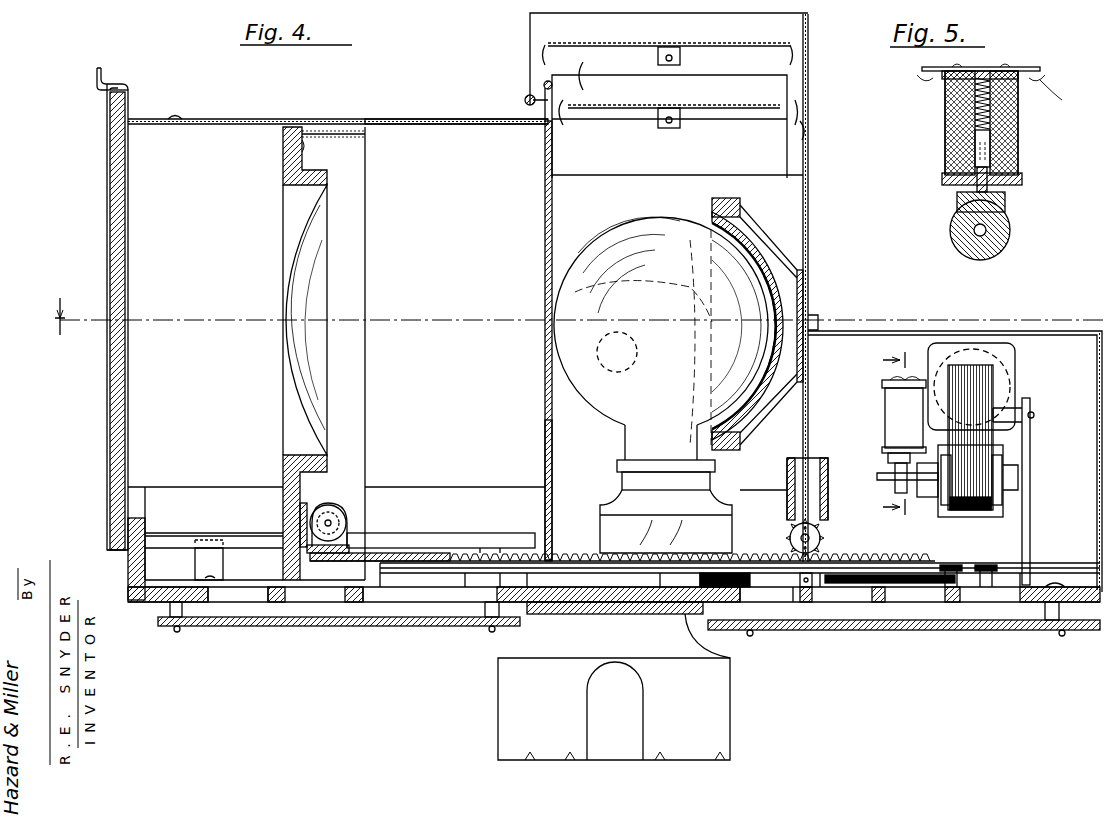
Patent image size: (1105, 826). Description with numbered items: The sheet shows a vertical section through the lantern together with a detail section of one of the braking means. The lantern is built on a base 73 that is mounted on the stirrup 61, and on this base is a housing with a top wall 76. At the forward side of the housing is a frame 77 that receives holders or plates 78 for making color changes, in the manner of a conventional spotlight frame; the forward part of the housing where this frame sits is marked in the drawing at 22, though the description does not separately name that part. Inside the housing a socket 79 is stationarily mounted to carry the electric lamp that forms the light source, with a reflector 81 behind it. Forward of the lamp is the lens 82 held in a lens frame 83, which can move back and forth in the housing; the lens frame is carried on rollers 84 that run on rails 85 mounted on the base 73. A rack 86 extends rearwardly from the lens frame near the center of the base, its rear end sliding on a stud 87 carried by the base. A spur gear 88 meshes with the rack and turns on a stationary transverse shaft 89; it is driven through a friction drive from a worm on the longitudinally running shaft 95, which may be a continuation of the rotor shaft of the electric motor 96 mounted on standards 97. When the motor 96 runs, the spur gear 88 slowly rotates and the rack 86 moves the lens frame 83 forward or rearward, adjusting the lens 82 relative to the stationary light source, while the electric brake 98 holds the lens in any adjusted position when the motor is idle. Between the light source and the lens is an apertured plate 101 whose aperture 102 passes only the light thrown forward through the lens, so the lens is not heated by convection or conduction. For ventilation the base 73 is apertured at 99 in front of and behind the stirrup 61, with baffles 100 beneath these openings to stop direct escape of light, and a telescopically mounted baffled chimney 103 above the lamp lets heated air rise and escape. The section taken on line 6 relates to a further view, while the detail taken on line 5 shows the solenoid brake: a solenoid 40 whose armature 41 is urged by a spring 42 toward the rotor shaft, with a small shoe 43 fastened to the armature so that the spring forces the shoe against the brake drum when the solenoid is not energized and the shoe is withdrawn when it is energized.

In FIG. 4, the frame 77 is at (134, 101).
In FIG. 4, the top plate 22 is at (282, 119).
In FIG. 4, the top wall 76 is at (415, 119).
In FIG. 4, the baffled chimney 103 is at (528, 62).
In FIG. 4, the holders or plates 78 is at (115, 236).
In FIG. 4, the lens frame 83 is at (288, 177).
In FIG. 4, the lens 82 is at (300, 370).
In FIG. 4, the aperture 102 is at (545, 262).
In FIG. 4, the apertured plate 101 is at (545, 440).
In FIG. 4, the reflector 81 is at (770, 252).
In FIG. 4, the section line 6 is at (55, 309).
In FIG. 4, the rollers 84 is at (350, 506).
In FIG. 4, the rails 85 is at (410, 533).
In FIG. 4, the rack 86 is at (558, 565).
In FIG. 4, the socket 79 is at (718, 496).
In FIG. 4, the electric brake 98 is at (891, 418).
In FIG. 5, the electric brake 98 is at (1038, 180).
In FIG. 4, the electric motor 96 is at (963, 422).
In FIG. 4, the shaft 95 is at (886, 471).
In FIG. 4, the standards 97 is at (1026, 473).
In FIG. 4, the section line 5 is at (882, 434).
In FIG. 4, the transverse shaft 89 is at (815, 538).
In FIG. 4, the spur gear 88 is at (826, 548).
In FIG. 4, the stud 87 is at (802, 590).
In FIG. 4, the apertures 99 is at (305, 605).
In FIG. 4, the baffles 100 is at (1025, 630).
In FIG. 4, the base 73 is at (540, 610).
In FIG. 4, the stirrup 61 is at (595, 612).
In FIG. 5, the spring 42 is at (975, 100).
In FIG. 5, the armature 41 is at (975, 160).
In FIG. 5, the solenoid 40 is at (1010, 137).
In FIG. 5, the shoe 43 is at (1005, 201).